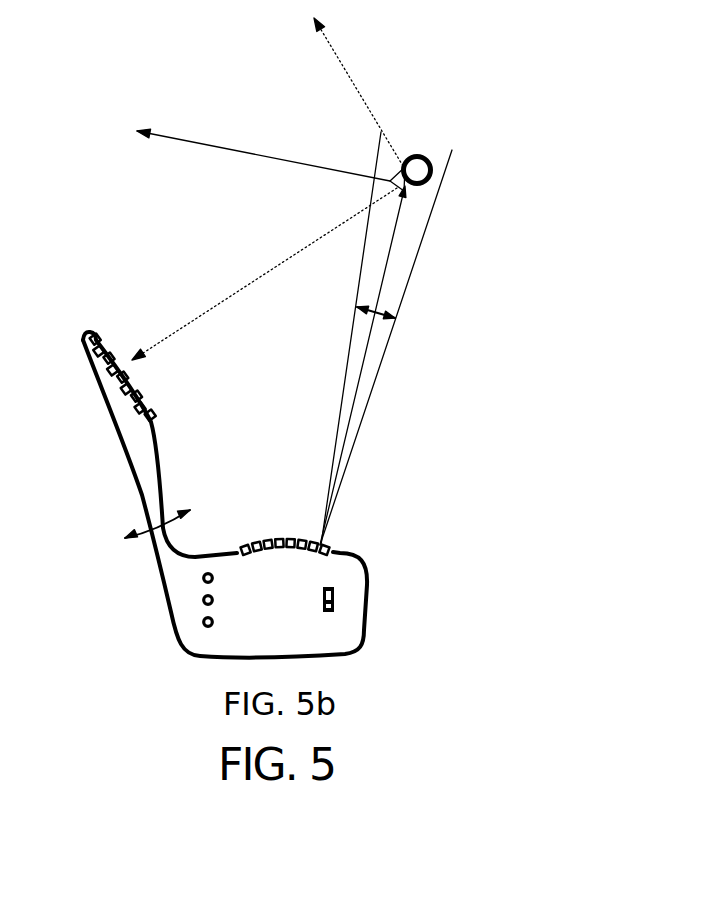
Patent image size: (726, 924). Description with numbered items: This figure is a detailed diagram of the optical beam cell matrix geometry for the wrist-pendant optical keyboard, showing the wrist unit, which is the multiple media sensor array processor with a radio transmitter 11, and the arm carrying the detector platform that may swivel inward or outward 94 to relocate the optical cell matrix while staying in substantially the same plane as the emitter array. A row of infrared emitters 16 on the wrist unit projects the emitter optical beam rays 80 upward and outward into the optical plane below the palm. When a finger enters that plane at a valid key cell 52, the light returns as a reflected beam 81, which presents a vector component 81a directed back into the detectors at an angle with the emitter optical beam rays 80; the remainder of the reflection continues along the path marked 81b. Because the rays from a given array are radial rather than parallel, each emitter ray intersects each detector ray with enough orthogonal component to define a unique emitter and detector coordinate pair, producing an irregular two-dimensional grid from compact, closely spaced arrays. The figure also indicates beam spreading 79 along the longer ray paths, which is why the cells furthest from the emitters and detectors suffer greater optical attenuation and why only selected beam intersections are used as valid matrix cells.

The multiple media sensor array processor with a radio transmitter 11 is at (345, 625).
The infrared emitters 16 is at (335, 549).
The valid key cells 52 is at (418, 156).
The beam spreading 79 is at (380, 309).
The emitter optical beam rays 80 is at (385, 280).
The reflected beam 81 is at (275, 158).
The vector component of the reflected beam 81a is at (195, 322).
The light beam upward 81b is at (353, 88).
The swivel inward or outward 94 is at (160, 552).